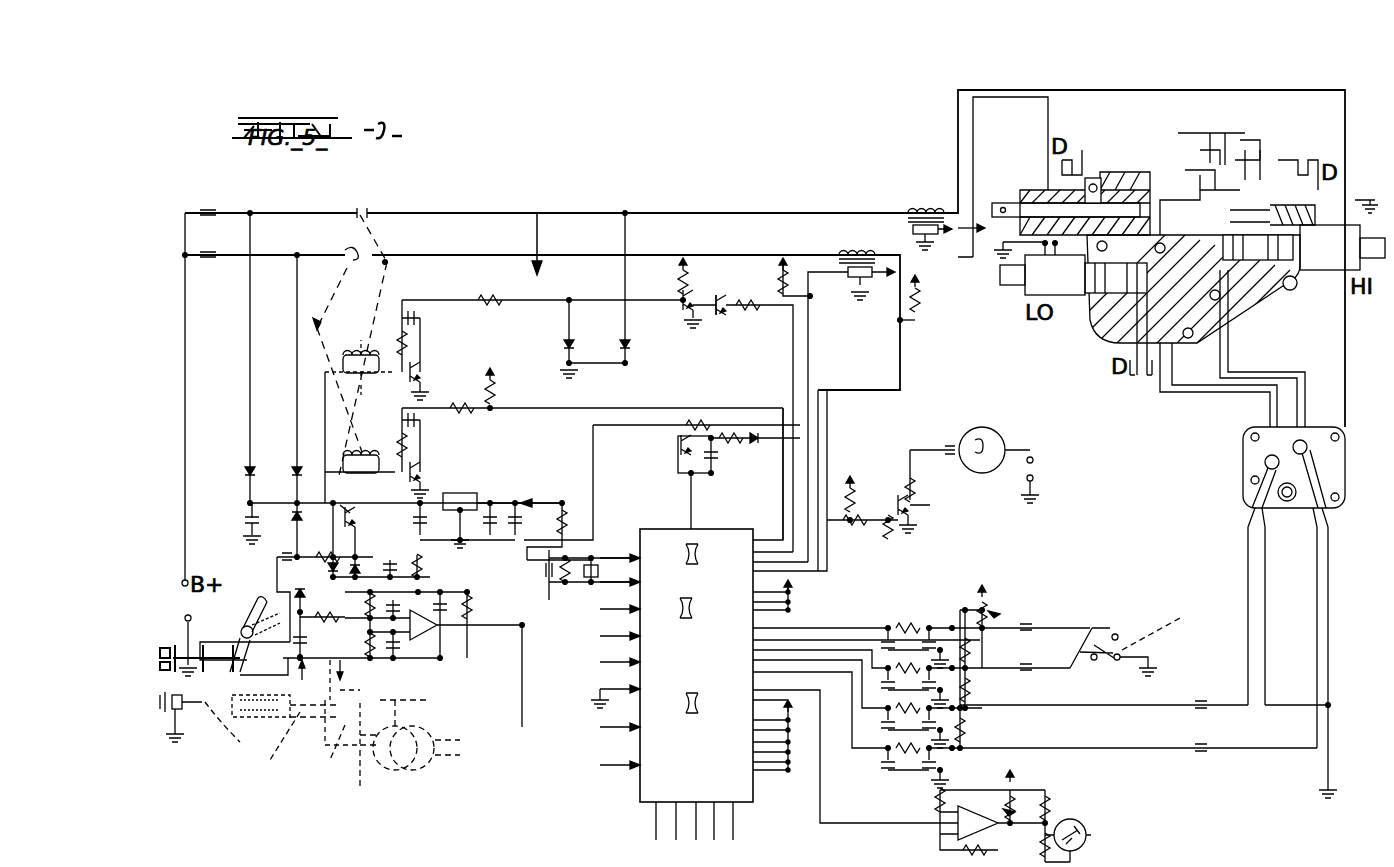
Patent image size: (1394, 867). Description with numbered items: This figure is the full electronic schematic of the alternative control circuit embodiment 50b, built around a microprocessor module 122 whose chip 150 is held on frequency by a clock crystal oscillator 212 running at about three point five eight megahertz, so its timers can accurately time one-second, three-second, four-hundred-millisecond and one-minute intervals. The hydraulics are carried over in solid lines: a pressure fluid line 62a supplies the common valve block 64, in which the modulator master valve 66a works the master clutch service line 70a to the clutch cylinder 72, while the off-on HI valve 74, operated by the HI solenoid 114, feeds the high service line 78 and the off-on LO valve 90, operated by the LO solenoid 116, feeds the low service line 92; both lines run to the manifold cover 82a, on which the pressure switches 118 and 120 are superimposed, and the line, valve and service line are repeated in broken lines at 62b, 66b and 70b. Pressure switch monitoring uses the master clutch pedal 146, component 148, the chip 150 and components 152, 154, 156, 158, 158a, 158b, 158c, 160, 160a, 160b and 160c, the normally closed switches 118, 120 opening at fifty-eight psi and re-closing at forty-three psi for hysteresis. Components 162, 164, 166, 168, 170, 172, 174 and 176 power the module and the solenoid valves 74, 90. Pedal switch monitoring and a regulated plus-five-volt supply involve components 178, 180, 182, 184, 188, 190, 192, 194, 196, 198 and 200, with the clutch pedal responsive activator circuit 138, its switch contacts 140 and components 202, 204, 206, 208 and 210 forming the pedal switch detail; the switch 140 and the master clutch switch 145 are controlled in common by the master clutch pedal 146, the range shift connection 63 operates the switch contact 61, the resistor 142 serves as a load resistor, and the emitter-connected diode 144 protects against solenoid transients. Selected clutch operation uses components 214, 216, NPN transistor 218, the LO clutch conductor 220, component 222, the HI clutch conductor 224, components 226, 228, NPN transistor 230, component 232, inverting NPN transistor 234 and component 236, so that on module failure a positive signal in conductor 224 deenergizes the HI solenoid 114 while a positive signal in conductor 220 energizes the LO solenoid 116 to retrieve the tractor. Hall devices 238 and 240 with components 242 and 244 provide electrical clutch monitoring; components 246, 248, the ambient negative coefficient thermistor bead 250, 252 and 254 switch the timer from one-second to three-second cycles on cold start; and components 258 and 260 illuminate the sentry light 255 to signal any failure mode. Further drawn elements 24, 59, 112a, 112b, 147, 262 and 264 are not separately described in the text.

The motor 24 is at (430, 638).
The electronic control circuit embodiment 50b is at (678, 198).
The switch 59 is at (1130, 686).
The switch contact 61 is at (195, 723).
The pressure fluid line 62a is at (1247, 150).
The pressure fluid line 62b is at (345, 701).
The range shift connection 63 is at (205, 711).
The common valve block 64 is at (1134, 165).
The modulator master valve 66a is at (1252, 195).
The modulator master valve 66b is at (344, 755).
The master clutch service line 70a is at (1195, 115).
The master clutch service line 70b is at (374, 780).
The clutch cylinder 72 is at (416, 762).
The off-on HI valve 74 is at (1245, 250).
The high service line 78 is at (1298, 366).
The manifold cover 82a is at (1343, 475).
The off-on LO valve 90 is at (1135, 350).
The low service line 92 is at (1204, 392).
The shaft 112a is at (1010, 200).
The shaft 112b is at (301, 735).
The HI solenoid 114 is at (1320, 265).
The LO solenoid 116 is at (1033, 291).
The pressure switch 118 is at (1304, 435).
The pressure switch 120 is at (1266, 460).
The microprocessor module 122 is at (540, 228).
The clutch pedal responsive activator circuit 138 is at (221, 637).
The switch contacts 140 is at (188, 655).
The resistor 142 is at (1090, 628).
The emitter-connected diode 144 is at (1098, 628).
The master clutch switch 145 is at (202, 672).
The master clutch pedal 146 is at (303, 582).
The line 147 is at (1054, 708).
The pressure switch monitoring component 148 is at (1116, 748).
The chip 150 is at (736, 794).
The pressure switch monitoring component 152 is at (930, 570).
The pressure switch monitoring component 154 is at (1213, 743).
The pressure switch monitoring component 156 is at (1328, 763).
The pressure switch monitoring component 158 is at (968, 730).
The pressure switch monitoring component 158a is at (982, 688).
The pressure switch monitoring component 158b is at (993, 645).
The pressure switch monitoring component 158c is at (989, 612).
The pressure switch monitoring component 160 is at (905, 770).
The pressure switch monitoring component 160a is at (905, 708).
The pressure switch monitoring component 160b is at (900, 670).
The pressure switch monitoring component 160c is at (901, 626).
The power supply component 162 is at (433, 213).
The power supply component 164 is at (432, 255).
The power supply component 166 is at (255, 415).
The power supply component 168 is at (290, 445).
The power supply component 170 is at (572, 308).
The power supply component 172 is at (646, 289).
The power supply component 174 is at (208, 213).
The power supply component 176 is at (197, 262).
The pedal switch monitoring and regulated supply component 178 is at (378, 542).
The pedal switch monitoring and regulated supply component 180 is at (455, 493).
The pedal switch monitoring and regulated supply component 182 is at (490, 498).
The pedal switch monitoring and regulated supply component 184 is at (465, 534).
The pedal switch monitoring and regulated supply component 188 is at (344, 524).
The pedal switch monitoring and regulated supply component 190 is at (362, 558).
The pedal switch monitoring and regulated supply component 192 is at (272, 523).
The pedal switch monitoring and regulated supply component 194 is at (412, 474).
The pedal switch monitoring and regulated supply component 196 is at (562, 528).
The pedal switch monitoring and regulated supply component 198 is at (458, 560).
The pedal switch monitoring and regulated supply component 200 is at (306, 555).
The pedal switch monitoring circuit component 202 is at (278, 575).
The pedal switch monitoring circuit component 204 is at (261, 695).
The pedal switch monitoring circuit component 206 is at (430, 625).
The pedal switch monitoring circuit component 208 is at (467, 630).
The pedal switch monitoring circuit component 210 is at (319, 624).
The clock crystal oscillator 212 is at (592, 562).
The selected clutch operation component 214 is at (351, 258).
The selected clutch operation component 216 is at (360, 421).
The NPN transistor 218 is at (412, 468).
The LO clutch conductor 220 is at (628, 408).
The selected clutch operation component 222 is at (530, 382).
The HI clutch conductor 224 is at (780, 364).
The selected clutch operation component 226 is at (361, 357).
The selected clutch operation component 228 is at (353, 206).
The NPN transistor 230 is at (410, 356).
The selected clutch operation component 232 is at (546, 304).
The inverting NPN transistor 234 is at (716, 278).
The selected clutch operation component 236 is at (740, 316).
The Hall device 238 is at (856, 280).
The Hall device 240 is at (919, 220).
The electrical clutch monitoring component 242 is at (818, 376).
The electrical clutch monitoring component 244 is at (916, 342).
The timer switching component 246 is at (840, 832).
The timer switching component 248 is at (955, 832).
The ambient negative coefficient thermistor bead 250 is at (1088, 835).
The timer switching component 252 is at (1046, 800).
The timer switching component 254 is at (1013, 803).
The sentry light 255 is at (1000, 430).
The sentry light illumination component 258 is at (918, 510).
The sentry light illumination component 260 is at (852, 522).
The resistor 262 is at (766, 438).
The transistor 264 is at (660, 440).